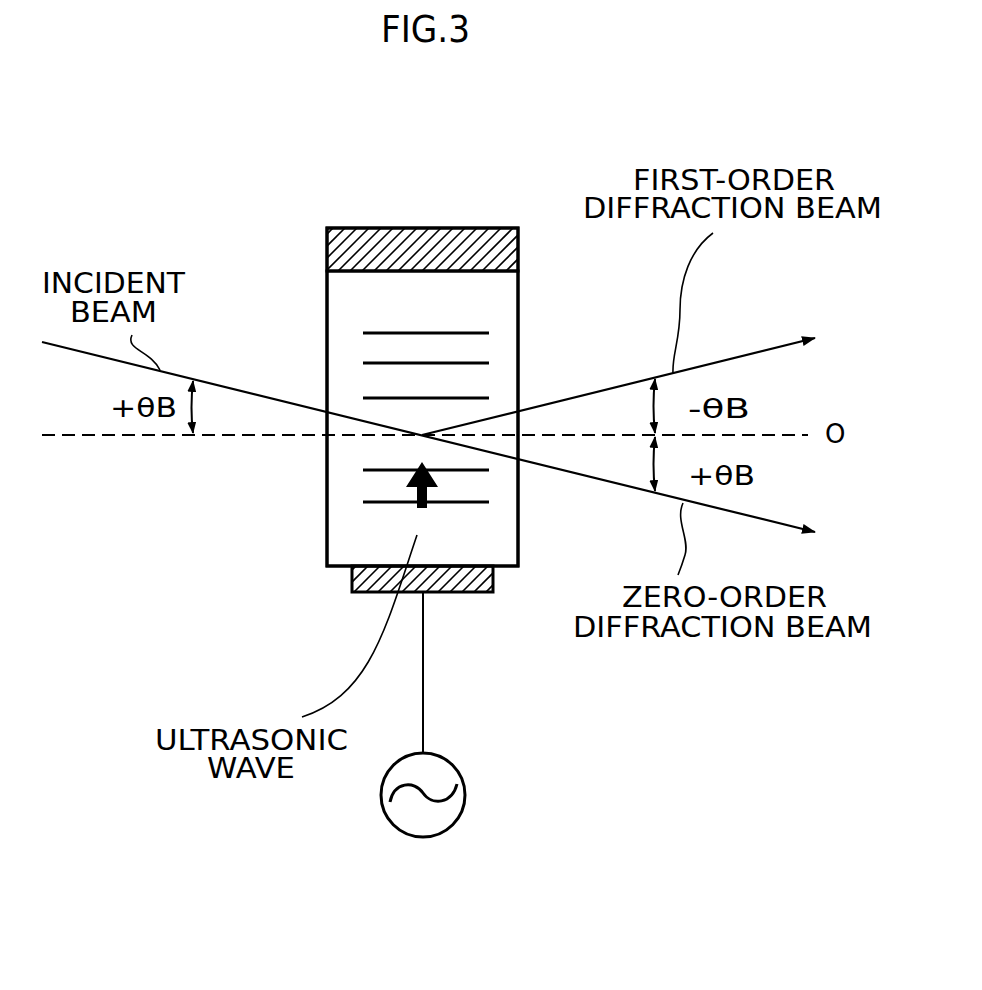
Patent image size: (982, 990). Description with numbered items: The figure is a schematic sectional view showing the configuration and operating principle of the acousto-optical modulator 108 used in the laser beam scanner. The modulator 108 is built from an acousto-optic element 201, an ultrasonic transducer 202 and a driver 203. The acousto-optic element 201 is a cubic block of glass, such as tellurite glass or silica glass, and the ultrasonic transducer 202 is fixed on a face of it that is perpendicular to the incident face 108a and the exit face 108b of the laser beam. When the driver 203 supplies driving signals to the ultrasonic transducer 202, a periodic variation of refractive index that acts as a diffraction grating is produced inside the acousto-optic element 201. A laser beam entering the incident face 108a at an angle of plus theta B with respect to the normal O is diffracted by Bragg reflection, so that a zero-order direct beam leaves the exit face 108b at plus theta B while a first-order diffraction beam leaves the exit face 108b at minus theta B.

The acousto-optical modulator 108 is at (525, 188).
The incident face 108a is at (302, 317).
The exit face 108b is at (548, 356).
The acousto-optic element 201 is at (327, 490).
The ultrasonic transducer 202 is at (460, 592).
The driver 203 is at (465, 795).